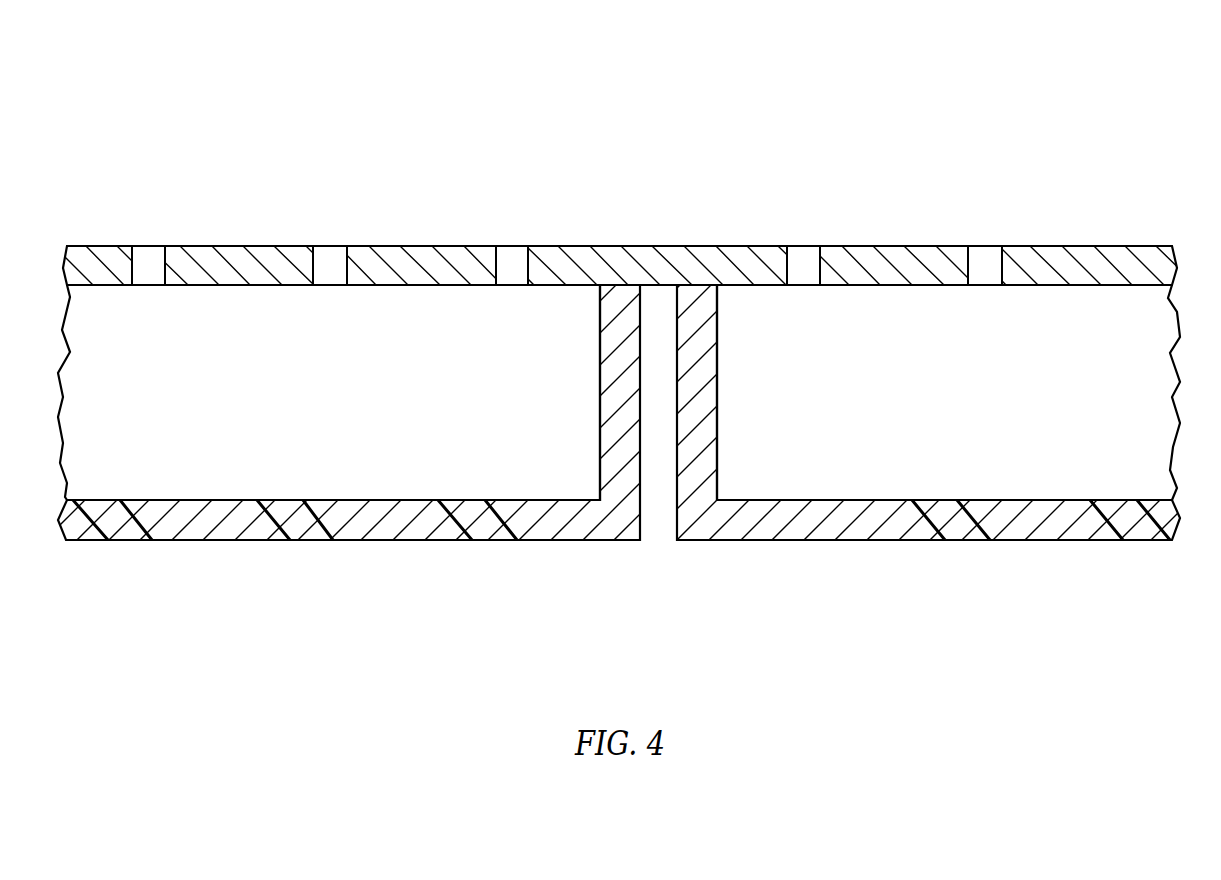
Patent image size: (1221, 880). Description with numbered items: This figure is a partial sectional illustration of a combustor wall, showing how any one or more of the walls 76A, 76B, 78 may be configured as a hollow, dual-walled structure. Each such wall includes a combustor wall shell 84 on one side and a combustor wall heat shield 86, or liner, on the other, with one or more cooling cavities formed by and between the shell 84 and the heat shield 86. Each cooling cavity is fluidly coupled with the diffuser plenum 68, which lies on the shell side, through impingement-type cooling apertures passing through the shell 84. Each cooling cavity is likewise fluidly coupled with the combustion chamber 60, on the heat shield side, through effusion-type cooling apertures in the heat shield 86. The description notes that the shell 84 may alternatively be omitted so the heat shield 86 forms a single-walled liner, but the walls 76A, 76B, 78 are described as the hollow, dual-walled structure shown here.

The combustion chamber 60 is at (663, 664).
The diffuser plenum 68 is at (651, 142).
The wall 76A is at (617, 338).
The wall 76B is at (617, 338).
The wall 78 is at (1083, 65).
The combustor wall shell 84 is at (410, 244).
The combustor wall heat shield 86 is at (575, 546).